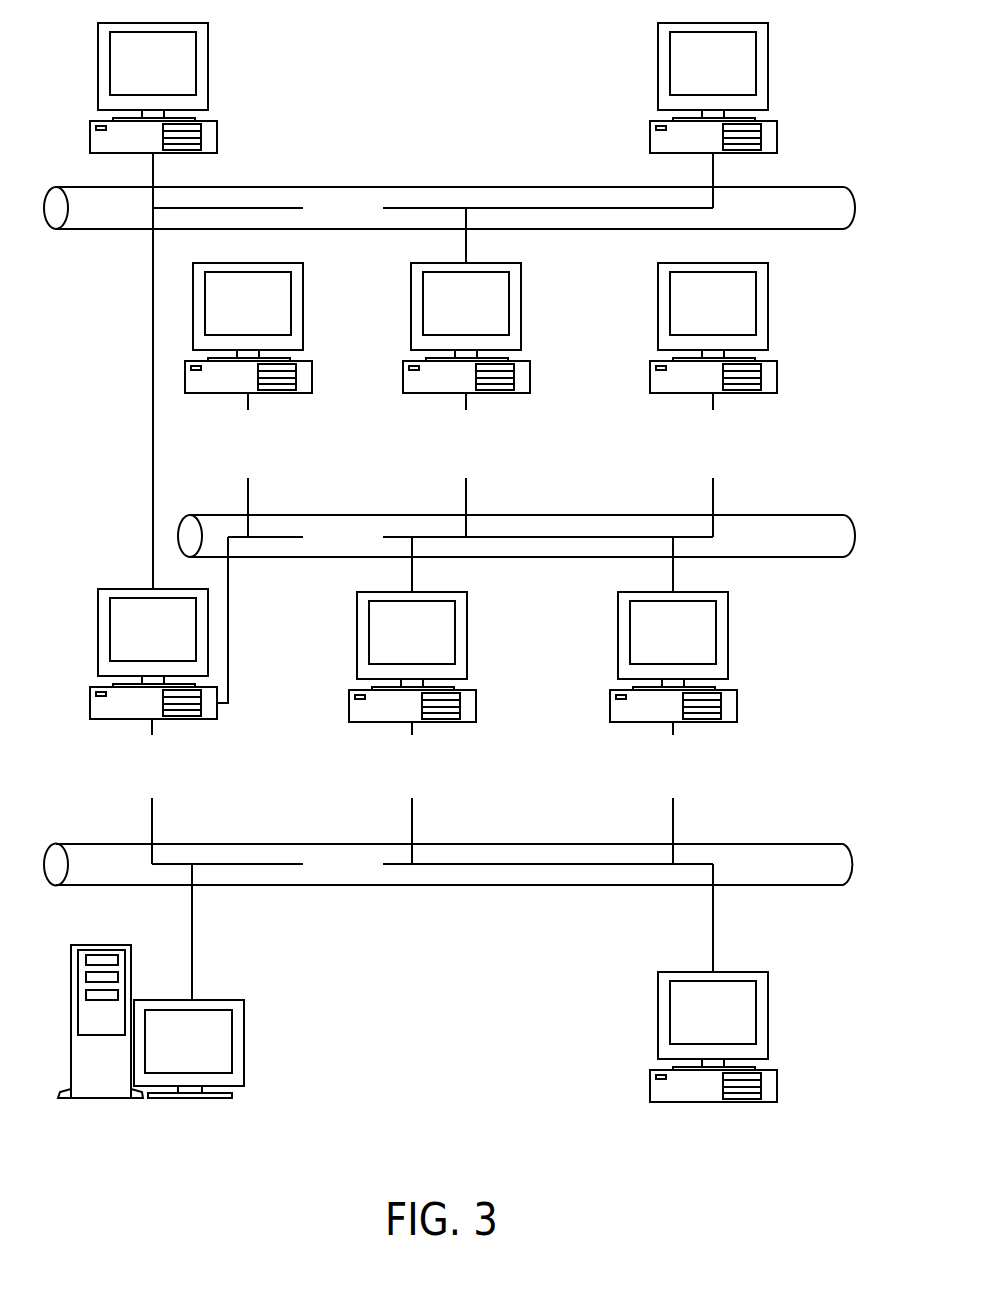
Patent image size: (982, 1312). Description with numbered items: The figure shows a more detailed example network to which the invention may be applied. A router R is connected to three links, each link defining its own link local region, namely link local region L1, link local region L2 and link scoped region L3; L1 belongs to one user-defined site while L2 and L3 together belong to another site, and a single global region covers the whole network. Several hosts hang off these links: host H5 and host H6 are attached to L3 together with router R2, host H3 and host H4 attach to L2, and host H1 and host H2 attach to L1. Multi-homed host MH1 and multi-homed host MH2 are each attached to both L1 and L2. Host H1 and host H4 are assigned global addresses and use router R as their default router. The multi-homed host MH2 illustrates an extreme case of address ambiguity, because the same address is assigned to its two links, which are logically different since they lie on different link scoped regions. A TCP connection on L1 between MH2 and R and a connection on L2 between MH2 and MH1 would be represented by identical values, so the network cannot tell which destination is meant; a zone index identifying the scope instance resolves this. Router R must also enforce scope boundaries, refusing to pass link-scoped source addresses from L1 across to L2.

The link local region L1 is at (448, 865).
The link local region L2 is at (516, 536).
The link scoped region L3 is at (449, 208).
The host H1 is at (151, 1014).
The host H2 is at (713, 1015).
The host H3 is at (248, 400).
The host H4 is at (713, 400).
The host H5 is at (188, 306).
The host H6 is at (748, 115).
The router R is at (151, 700).
The router R2 is at (466, 372).
The multi-homed host MH1 is at (410, 700).
The multi-homed host MH2 is at (672, 700).